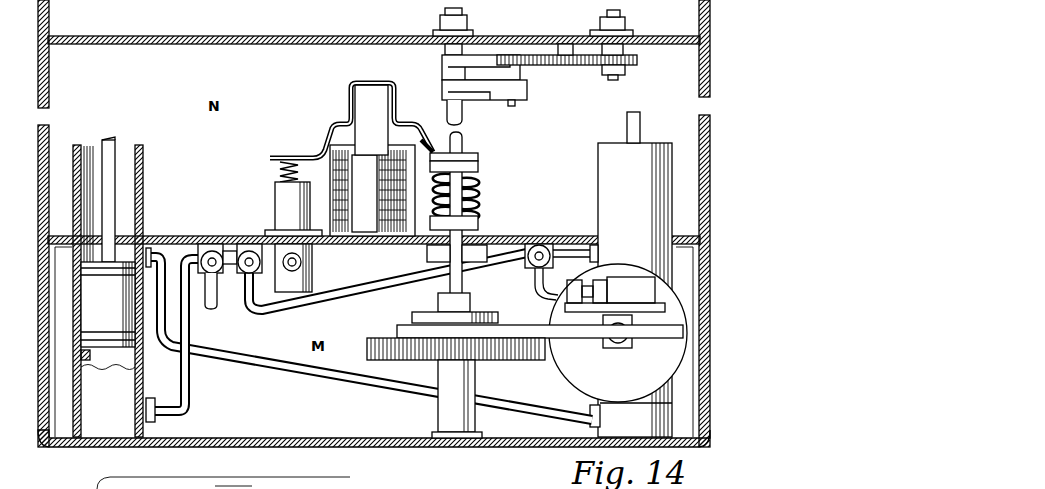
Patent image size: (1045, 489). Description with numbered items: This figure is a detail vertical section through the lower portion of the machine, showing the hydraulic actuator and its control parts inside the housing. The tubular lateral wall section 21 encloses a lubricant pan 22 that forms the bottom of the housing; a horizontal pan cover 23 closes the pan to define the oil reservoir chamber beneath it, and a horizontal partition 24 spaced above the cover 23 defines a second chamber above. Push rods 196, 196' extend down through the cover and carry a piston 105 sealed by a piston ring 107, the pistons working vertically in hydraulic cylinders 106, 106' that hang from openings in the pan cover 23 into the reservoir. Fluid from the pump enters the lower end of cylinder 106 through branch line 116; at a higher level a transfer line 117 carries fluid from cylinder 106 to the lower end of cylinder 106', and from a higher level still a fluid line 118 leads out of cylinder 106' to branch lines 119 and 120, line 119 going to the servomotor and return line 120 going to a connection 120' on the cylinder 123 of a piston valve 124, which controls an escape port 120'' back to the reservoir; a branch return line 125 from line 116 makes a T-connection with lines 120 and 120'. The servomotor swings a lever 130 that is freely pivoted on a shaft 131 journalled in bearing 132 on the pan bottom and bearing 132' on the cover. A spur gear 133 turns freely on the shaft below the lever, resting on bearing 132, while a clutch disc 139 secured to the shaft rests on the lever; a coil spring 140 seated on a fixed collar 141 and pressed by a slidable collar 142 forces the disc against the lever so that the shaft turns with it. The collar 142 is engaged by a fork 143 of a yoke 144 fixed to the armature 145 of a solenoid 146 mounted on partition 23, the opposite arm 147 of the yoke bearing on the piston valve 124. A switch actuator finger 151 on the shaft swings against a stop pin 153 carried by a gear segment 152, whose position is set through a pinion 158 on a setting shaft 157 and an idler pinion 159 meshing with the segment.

The tubular lateral wall section 21 is at (710, 165).
The lubricant pan 22 is at (317, 438).
The pan cover 23 is at (632, 238).
The horizontal partition 24 is at (216, 45).
The piston 105 is at (103, 304).
The hydraulic cylinder 106 is at (127, 291).
The hydraulic cylinder 106' is at (618, 290).
The piston ring 107 is at (104, 270).
The branch line 116 is at (186, 411).
The transfer line 117 is at (268, 356).
The fluid line 118 is at (545, 247).
The branch line 119 is at (535, 283).
The return line 120 is at (388, 291).
The connection 120' is at (246, 246).
The escape port 120'' is at (319, 262).
The cylinder 123 is at (312, 282).
The piston valve 124 is at (276, 183).
The branch return line 125 is at (222, 243).
The lever 130 is at (397, 332).
The shaft 131 is at (450, 290).
The bearing 132 is at (441, 399).
The bearing 132' is at (443, 138).
The spur gear 133 is at (505, 358).
The clutch disc 139 is at (412, 318).
The coil spring 140 is at (478, 187).
The collar 141 is at (478, 222).
The collar 142 is at (478, 166).
The fork 143 is at (478, 156).
The yoke 144 is at (385, 82).
The armature 145 is at (352, 88).
The solenoid 146 is at (372, 190).
The arm 147 is at (318, 150).
The switch actuator finger 151 is at (493, 90).
The gear segment 152 is at (488, 55).
The stop pin 153 is at (512, 106).
The setting shaft 157 is at (617, 12).
The pinion 158 is at (637, 58).
The idler pinion 159 is at (568, 66).
The push rod 196 is at (124, 192).
The push rod 196' is at (652, 127).